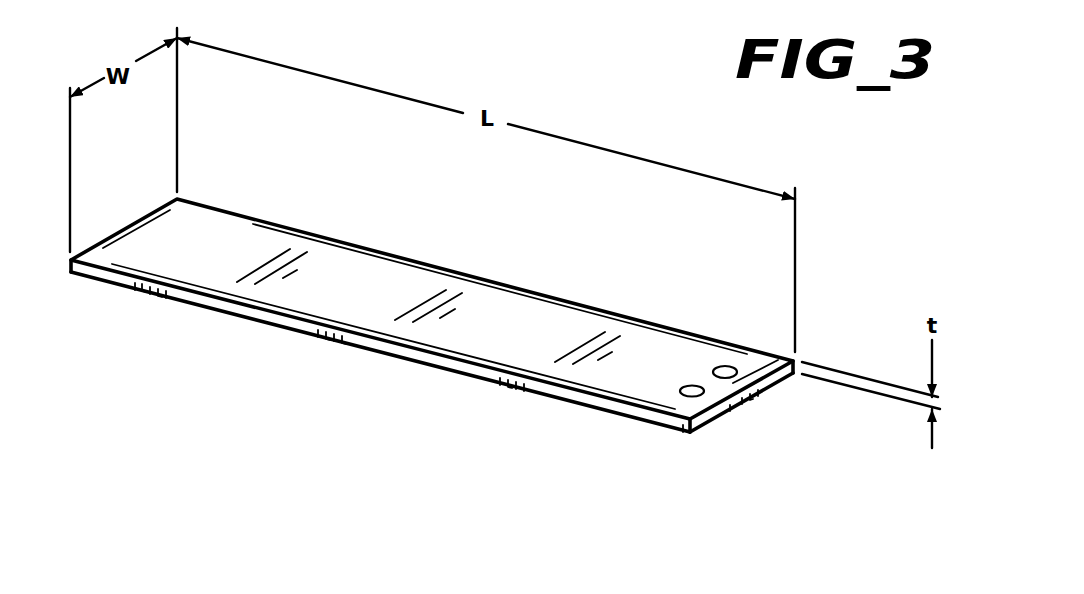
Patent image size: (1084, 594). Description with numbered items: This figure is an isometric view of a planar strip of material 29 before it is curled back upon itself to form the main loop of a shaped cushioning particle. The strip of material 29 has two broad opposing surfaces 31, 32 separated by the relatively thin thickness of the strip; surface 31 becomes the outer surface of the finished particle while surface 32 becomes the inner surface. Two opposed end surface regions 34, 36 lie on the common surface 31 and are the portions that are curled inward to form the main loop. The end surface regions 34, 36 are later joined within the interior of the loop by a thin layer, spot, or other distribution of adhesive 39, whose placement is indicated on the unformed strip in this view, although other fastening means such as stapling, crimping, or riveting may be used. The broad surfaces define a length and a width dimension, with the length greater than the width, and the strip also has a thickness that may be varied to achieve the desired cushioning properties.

The strip of material 29 is at (548, 270).
The broad surface 31 is at (358, 268).
The broad surface 32 is at (407, 363).
The end surface region 34 is at (152, 243).
The end surface region 36 is at (667, 390).
The adhesive 39 is at (738, 402).